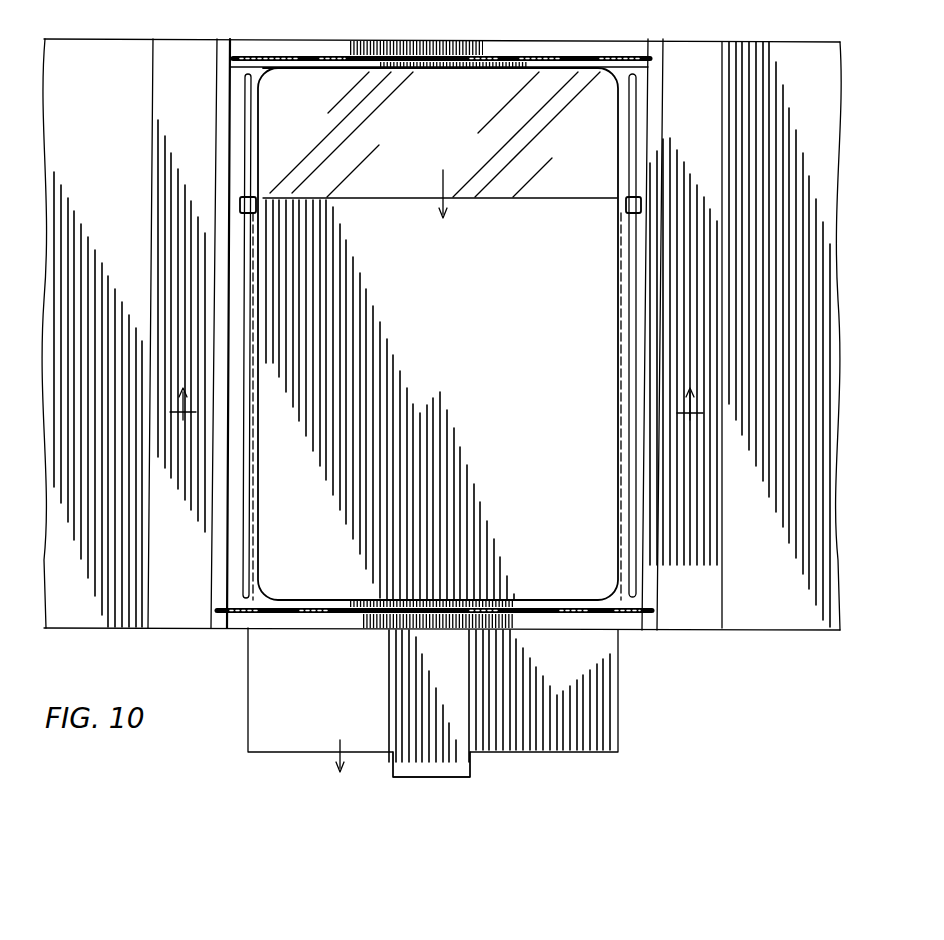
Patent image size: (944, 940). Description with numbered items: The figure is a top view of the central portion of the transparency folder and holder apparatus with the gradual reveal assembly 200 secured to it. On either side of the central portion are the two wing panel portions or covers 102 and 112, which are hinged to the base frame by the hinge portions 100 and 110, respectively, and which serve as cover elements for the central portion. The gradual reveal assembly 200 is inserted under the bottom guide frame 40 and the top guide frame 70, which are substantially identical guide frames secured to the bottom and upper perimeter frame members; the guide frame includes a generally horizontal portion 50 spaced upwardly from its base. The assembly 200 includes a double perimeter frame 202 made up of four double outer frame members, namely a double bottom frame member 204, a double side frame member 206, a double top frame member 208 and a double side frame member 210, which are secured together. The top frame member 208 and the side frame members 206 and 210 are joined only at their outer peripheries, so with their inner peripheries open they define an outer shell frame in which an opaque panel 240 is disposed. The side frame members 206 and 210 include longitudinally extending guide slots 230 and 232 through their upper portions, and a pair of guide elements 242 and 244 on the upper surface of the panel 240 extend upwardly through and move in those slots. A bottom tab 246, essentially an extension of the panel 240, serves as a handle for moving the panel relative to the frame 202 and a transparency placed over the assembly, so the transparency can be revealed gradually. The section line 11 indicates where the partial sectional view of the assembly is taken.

The section line 11— 11 is at (436, 420).
The bottom guide frame 40 is at (542, 616).
The generally horizontal portion 50 is at (543, 612).
The top guide frame 70 is at (523, 63).
The hinge portion 100 is at (690, 58).
The wing portion or cover 102 is at (793, 56).
The hinge portion 110 is at (196, 58).
The wing portion or cover 112 is at (120, 48).
The gradual reveal assembly 200 is at (433, 36).
The double perimeter frame 202 is at (303, 36).
The double bottom frame member 204 is at (280, 623).
The double side frame member 206 is at (636, 398).
The double top frame member 208 is at (340, 63).
The double side frame member 210 is at (233, 358).
The guide slot 230 is at (626, 118).
The guide slot 232 is at (247, 128).
The opaque panel 240 is at (250, 652).
The guide element 242 is at (616, 208).
The guide element 244 is at (257, 204).
The bottom tab 246 is at (393, 766).